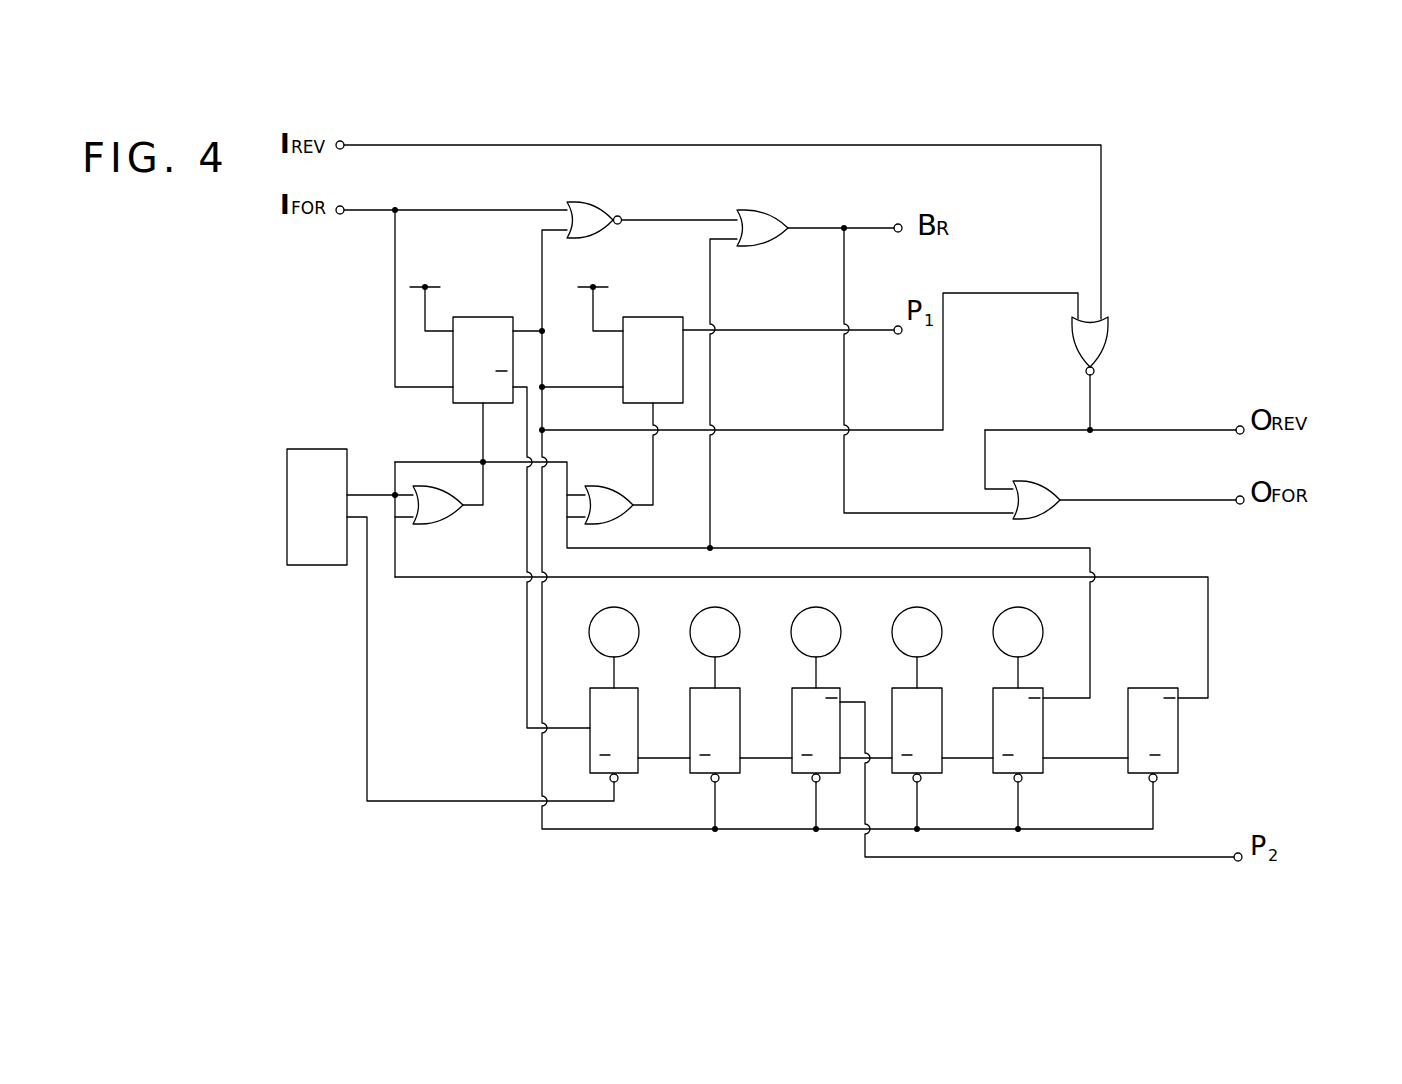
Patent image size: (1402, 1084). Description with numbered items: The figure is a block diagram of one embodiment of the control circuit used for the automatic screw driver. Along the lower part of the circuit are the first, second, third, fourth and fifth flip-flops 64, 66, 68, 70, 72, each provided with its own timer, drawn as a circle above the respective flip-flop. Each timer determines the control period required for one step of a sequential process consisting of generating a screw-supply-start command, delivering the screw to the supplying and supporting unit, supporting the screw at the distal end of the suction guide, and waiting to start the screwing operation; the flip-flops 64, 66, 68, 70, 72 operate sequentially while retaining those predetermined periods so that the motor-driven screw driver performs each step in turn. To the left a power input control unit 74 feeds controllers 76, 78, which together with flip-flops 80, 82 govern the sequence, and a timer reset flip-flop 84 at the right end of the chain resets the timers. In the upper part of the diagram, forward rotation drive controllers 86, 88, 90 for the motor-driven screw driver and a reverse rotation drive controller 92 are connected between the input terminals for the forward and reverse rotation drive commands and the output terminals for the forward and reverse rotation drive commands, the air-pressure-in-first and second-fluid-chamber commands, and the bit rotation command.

The first flip-flop 64 is at (638, 712).
The second flip-flop 66 is at (740, 712).
The third flip-flop 68 is at (840, 690).
The fourth flip-flop 70 is at (942, 708).
The fifth flip-flop 72 is at (1030, 685).
The power input control unit 74 is at (320, 449).
The controller 76 is at (448, 522).
The controller 78 is at (608, 486).
The flip-flop 80 is at (488, 316).
The flip-flop 82 is at (660, 316).
The timer reset flip-flop 84 is at (1148, 687).
The forward rotation drive controller 86 is at (590, 203).
The forward rotation drive controller 88 is at (760, 210).
The forward rotation drive controller 90 is at (1043, 484).
The reverse rotation drive controller 92 is at (1100, 337).